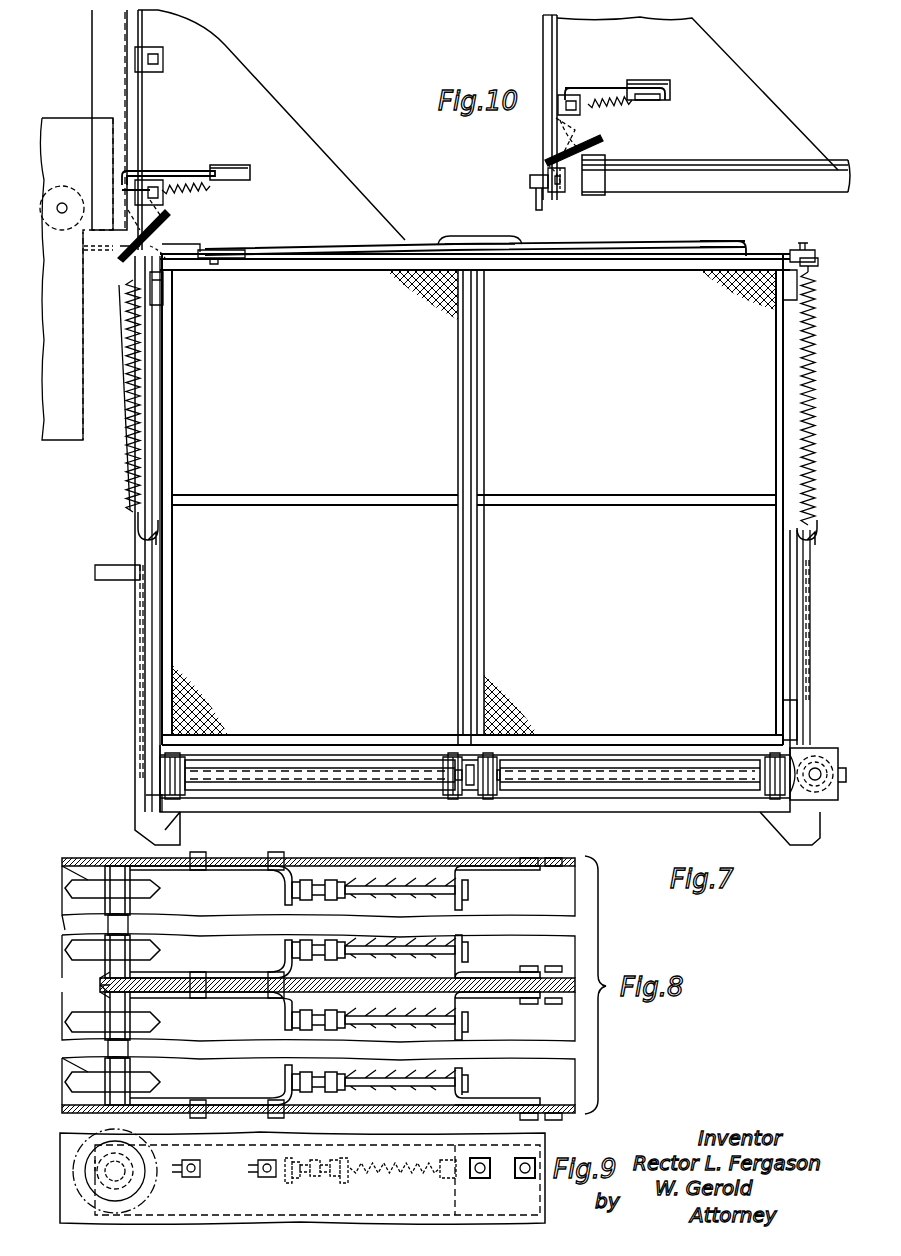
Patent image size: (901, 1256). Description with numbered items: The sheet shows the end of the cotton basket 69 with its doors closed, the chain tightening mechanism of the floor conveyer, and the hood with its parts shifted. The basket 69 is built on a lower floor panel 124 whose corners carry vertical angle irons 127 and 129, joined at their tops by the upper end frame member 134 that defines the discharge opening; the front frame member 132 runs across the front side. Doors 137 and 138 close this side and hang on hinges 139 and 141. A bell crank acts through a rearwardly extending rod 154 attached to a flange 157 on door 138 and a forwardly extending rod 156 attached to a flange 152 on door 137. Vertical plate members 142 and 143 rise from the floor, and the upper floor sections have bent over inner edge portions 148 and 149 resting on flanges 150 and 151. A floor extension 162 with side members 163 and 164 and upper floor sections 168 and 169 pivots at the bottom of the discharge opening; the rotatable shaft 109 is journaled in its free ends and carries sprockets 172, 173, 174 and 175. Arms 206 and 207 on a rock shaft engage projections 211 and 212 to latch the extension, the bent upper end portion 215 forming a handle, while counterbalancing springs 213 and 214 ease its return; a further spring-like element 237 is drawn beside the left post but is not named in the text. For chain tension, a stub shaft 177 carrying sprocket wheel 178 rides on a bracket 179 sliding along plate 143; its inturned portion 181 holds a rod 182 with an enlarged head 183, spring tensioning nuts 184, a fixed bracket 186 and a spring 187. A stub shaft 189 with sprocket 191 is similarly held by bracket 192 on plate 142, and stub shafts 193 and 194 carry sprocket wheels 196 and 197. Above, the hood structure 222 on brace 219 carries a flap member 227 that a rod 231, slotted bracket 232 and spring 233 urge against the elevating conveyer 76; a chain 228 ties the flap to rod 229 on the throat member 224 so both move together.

In FIG. 7, the basket 69 is at (475, 499).
In FIG. 7, the picked material elevating conveyer 76 is at (68, 440).
In FIG. 7, the rotatable shaft 109 is at (648, 770).
In FIG. 7, the lower floor panel 124 is at (688, 800).
In FIG. 9, the lower floor panel 124 is at (148, 1195).
In FIG. 7, the angle iron 127 is at (135, 652).
In FIG. 7, the angle iron 129 is at (808, 641).
In FIG. 10, the front frame member 132 is at (576, 194).
In FIG. 10, the upper end frame member 134 is at (795, 186).
In FIG. 7, the door 137 is at (302, 280).
In FIG. 7, the door 138 is at (640, 285).
In FIG. 7, the hinge 139 is at (162, 290).
In FIG. 7, the hinge 141 is at (788, 295).
In FIG. 8, the vertical plate member 142 is at (318, 988).
In FIG. 9, the vertical plate member 142 is at (410, 1145).
In FIG. 8, the vertical plate member 143 is at (380, 858).
In FIG. 8, the bent over inner edge portion 148 is at (418, 986).
In FIG. 8, the bent over inner edge portion 149 is at (418, 993).
In FIG. 8, the flange 150 is at (238, 978).
In FIG. 8, the flange 151 is at (240, 1005).
In FIG. 7, the flange 152 is at (215, 262).
In FIG. 7, the rearwardly extending rod 154 is at (720, 245).
In FIG. 7, the forwardly extending rod 156 is at (432, 242).
In FIG. 7, the flange 157 is at (770, 254).
In FIG. 7, the floor extension 162 is at (612, 790).
In FIG. 7, the side member 163 is at (156, 775).
In FIG. 7, the side member 164 is at (808, 812).
In FIG. 7, the upper floor panel section 168 is at (505, 762).
In FIG. 7, the upper floor panel section 169 is at (458, 760).
In FIG. 7, the sprocket 172 is at (160, 797).
In FIG. 7, the sprocket 173 is at (455, 797).
In FIG. 7, the sprocket 174 is at (488, 797).
In FIG. 7, the sprocket 175 is at (768, 810).
In FIG. 8, the stub shaft 177 is at (135, 928).
In FIG. 8, the sprocket wheel 178 is at (160, 895).
In FIG. 8, the bracket 179 is at (230, 858).
In FIG. 8, the inturned portion 181 is at (285, 900).
In FIG. 8, the rod 182 is at (418, 900).
In FIG. 9, the rod 182 is at (360, 1182).
In FIG. 8, the enlarged head 183 is at (470, 895).
In FIG. 8, the spring tensioning nuts 184 is at (320, 885).
In FIG. 9, the spring tensioning nuts 184 is at (325, 1185).
In FIG. 8, the bracket 186 is at (530, 858).
In FIG. 9, the bracket 186 is at (483, 1195).
In FIG. 8, the spring 187 is at (440, 885).
In FIG. 9, the spring 187 is at (436, 1182).
In FIG. 8, the stub shaft 189 is at (115, 1058).
In FIG. 8, the sprocket 191 is at (160, 1082).
In FIG. 9, the sprocket 191 is at (160, 1163).
In FIG. 8, the bracket 192 is at (245, 1096).
In FIG. 9, the bracket 192 is at (250, 1192).
In FIG. 8, the stub shaft 193 is at (100, 996).
In FIG. 8, the stub shaft 194 is at (100, 976).
In FIG. 8, the sprocket wheel 196 is at (160, 1022).
In FIG. 8, the sprocket wheel 197 is at (160, 955).
In FIG. 7, the arm 206 is at (140, 686).
In FIG. 7, the arm 207 is at (800, 684).
In FIG. 7, the projection 211 is at (140, 596).
In FIG. 7, the projection 212 is at (806, 595).
In FIG. 7, the counterbalancing spring 213 is at (134, 500).
In FIG. 7, the counterbalancing spring 214 is at (806, 486).
In FIG. 7, the bent upper end portion 215 is at (107, 565).
In FIG. 10, the short transverse brace 219 is at (822, 160).
In FIG. 7, the hood structure 222 is at (272, 110).
In FIG. 10, the hood structure 222 is at (752, 82).
In FIG. 7, the throat member 224 is at (162, 244).
In FIG. 10, the throat member 224 is at (540, 165).
In FIG. 7, the flap member 227 is at (95, 50).
In FIG. 10, the flap member 227 is at (558, 40).
In FIG. 10, the chain 228 is at (596, 134).
In FIG. 7, the rod 229 is at (165, 226).
In FIG. 10, the rod 229 is at (600, 146).
In FIG. 7, the rod 231 is at (180, 172).
In FIG. 10, the rod 231 is at (588, 88).
In FIG. 7, the slotted bracket 232 is at (252, 161).
In FIG. 10, the slotted bracket 232 is at (656, 80).
In FIG. 10, the spring 233 is at (646, 102).
In FIG. 7, the spring 237 is at (119, 460).